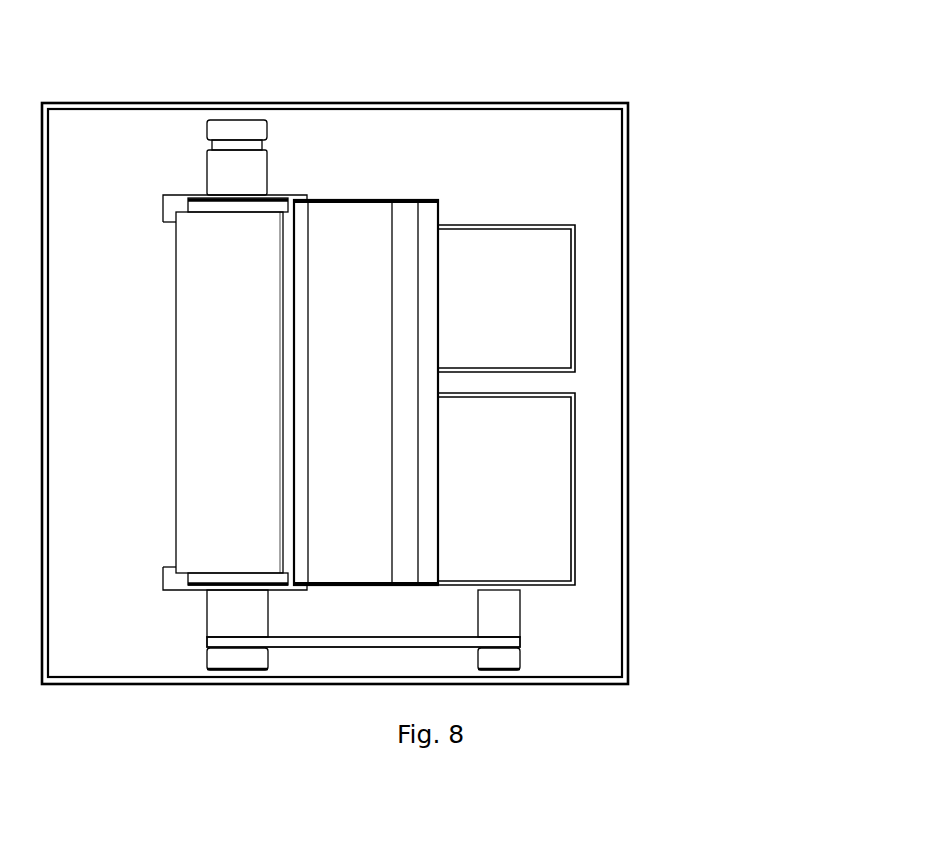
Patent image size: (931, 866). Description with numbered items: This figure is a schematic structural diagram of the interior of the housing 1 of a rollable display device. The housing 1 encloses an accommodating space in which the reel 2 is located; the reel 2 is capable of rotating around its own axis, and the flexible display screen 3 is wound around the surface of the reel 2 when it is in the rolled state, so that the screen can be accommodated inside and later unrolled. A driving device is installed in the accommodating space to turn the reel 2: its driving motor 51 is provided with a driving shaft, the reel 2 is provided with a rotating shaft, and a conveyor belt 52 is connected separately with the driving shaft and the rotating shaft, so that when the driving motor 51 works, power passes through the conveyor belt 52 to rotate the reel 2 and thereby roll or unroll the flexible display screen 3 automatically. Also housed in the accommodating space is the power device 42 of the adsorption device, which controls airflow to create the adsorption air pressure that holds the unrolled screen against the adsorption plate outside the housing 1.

The housing 1 is at (600, 173).
The reel 2 is at (235, 185).
The flexible display screen 3 is at (360, 230).
The power device 42 is at (528, 318).
The driving motor 51 is at (518, 495).
The conveyor belt 52 is at (475, 635).